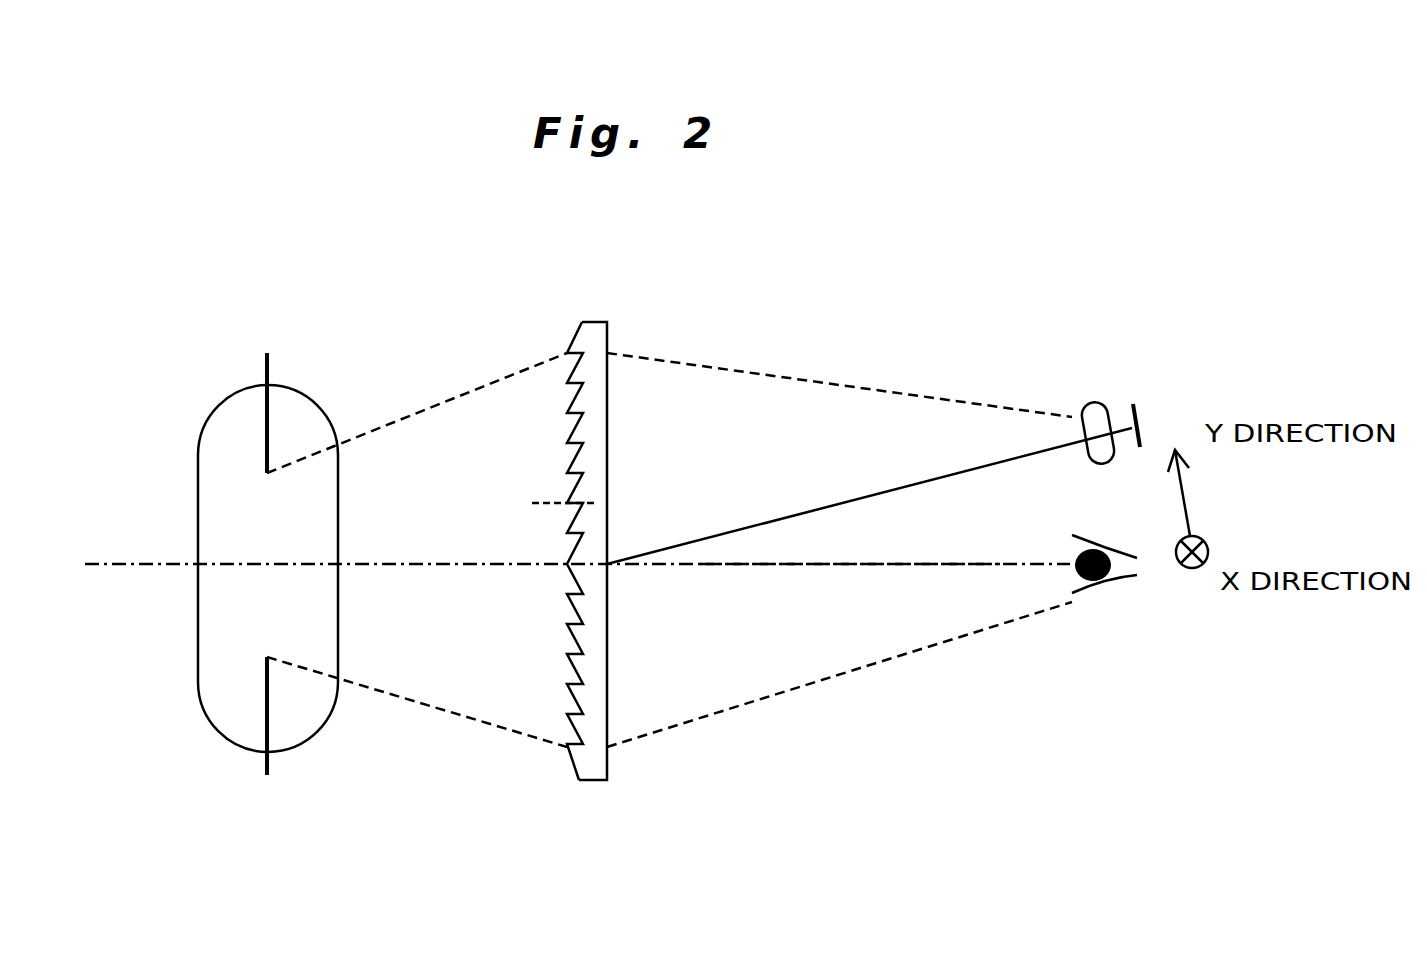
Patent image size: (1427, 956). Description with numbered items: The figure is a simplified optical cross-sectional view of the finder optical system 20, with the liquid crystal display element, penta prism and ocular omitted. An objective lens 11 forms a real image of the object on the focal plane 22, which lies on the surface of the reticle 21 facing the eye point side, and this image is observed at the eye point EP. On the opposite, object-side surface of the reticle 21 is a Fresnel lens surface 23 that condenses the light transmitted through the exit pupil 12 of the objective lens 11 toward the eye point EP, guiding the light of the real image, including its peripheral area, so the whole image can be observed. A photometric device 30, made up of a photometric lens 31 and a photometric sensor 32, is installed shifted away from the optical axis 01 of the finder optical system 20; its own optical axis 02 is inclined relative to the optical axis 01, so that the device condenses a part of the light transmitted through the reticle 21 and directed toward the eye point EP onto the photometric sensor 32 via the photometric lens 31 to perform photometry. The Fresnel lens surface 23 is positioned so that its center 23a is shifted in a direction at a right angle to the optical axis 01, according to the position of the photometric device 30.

The objective lens 11 is at (243, 735).
The exit pupil 12 is at (265, 372).
The finder optical system 20 is at (813, 302).
The reticle 21 is at (559, 542).
The focal plane 22 is at (612, 765).
The Fresnel lens surface 23 is at (585, 763).
The center of Fresnel lens surface 23a is at (537, 502).
The photometric device 30 is at (1188, 308).
The photometric lens 31 is at (1095, 410).
The photometric sensor 32 is at (1148, 405).
The optical axis of finder optical system 01 is at (717, 567).
The optical axis of photometric device 02 is at (787, 515).
The eye point EP is at (1095, 583).